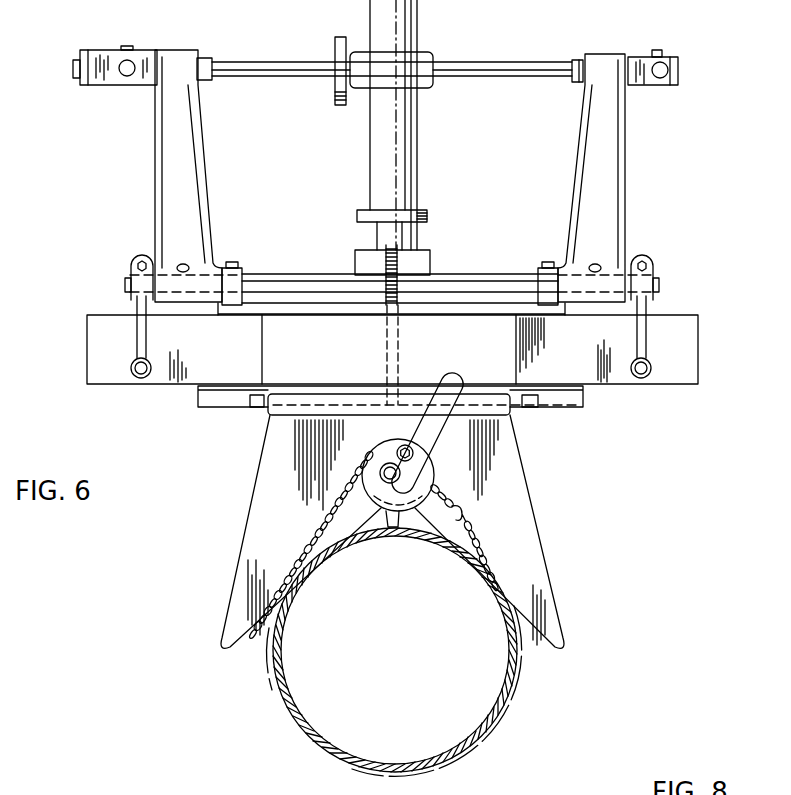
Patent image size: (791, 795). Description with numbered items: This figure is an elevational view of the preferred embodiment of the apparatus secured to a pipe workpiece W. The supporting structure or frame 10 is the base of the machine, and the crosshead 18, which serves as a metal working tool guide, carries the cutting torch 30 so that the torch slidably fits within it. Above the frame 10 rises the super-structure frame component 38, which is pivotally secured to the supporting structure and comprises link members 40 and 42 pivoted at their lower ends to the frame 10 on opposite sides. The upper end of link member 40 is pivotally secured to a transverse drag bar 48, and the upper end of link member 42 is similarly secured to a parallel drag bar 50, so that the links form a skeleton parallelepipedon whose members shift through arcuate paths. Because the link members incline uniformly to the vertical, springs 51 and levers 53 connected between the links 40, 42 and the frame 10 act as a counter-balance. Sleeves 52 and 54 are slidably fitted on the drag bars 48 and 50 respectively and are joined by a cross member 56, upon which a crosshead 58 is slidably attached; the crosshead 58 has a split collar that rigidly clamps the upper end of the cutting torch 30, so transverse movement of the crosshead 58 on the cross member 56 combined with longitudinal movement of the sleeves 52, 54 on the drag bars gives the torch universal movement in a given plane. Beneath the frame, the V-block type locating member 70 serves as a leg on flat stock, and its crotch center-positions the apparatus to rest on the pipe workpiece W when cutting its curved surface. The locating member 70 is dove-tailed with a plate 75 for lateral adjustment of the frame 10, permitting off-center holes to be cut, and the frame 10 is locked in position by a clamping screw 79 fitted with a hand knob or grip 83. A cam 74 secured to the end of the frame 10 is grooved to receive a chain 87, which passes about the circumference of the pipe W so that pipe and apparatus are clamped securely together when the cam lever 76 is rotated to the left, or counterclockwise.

The supporting structure or frame 10 is at (95, 368).
The crosshead 18 is at (450, 273).
The cutting torch 30 is at (412, 144).
The super-structure frame component 38 is at (644, 52).
The link member 40 is at (610, 160).
The link member 42 is at (170, 191).
The transverse drag bar 48 is at (658, 68).
The drag bar 50 is at (125, 78).
The spring 51 is at (87, 50).
The sleeve 52 is at (208, 55).
The lever 53 is at (140, 323).
The sleeve 54 is at (577, 58).
The cross member 56 is at (243, 72).
The crosshead 58 is at (423, 62).
The V-block type locating member 70 is at (236, 589).
The cam 74 is at (386, 506).
The plate 75 is at (578, 408).
The cam lever 76 is at (432, 438).
The clamping screw 79 is at (385, 258).
The hand knob or grip 83 is at (360, 210).
The chain 87 is at (322, 520).
The pipe workpiece W is at (285, 667).